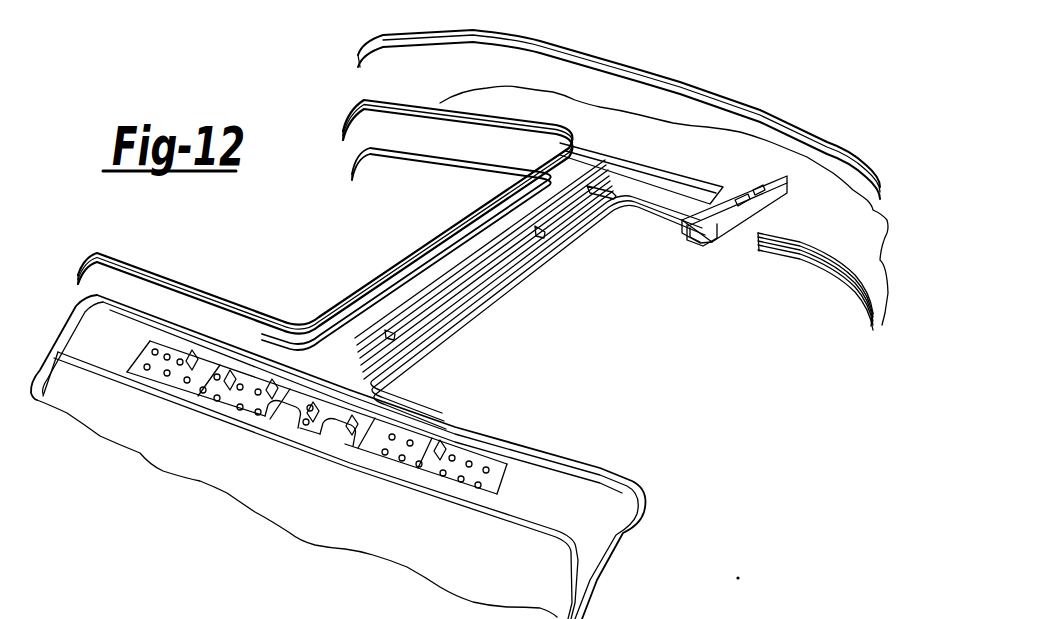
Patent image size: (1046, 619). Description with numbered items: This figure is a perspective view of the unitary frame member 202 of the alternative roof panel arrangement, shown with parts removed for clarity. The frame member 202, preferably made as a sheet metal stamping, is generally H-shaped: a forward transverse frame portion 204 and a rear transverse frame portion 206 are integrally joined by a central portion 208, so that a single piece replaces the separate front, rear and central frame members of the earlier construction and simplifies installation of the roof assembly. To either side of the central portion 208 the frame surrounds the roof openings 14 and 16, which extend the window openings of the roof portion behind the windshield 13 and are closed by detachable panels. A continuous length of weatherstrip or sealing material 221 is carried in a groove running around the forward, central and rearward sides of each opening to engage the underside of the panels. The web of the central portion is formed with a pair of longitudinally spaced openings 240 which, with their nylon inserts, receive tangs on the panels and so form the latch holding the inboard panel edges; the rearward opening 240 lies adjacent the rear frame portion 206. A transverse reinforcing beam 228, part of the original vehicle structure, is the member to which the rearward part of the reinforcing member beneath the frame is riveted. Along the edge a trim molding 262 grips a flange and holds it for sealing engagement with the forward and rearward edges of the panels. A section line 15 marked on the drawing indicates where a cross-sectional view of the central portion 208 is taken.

The trim molding 262 is at (552, 47).
The opening 16 is at (265, 229).
The weatherstrip or sealing material 221 is at (312, 284).
The unitary frame member 202 is at (553, 293).
The central frame portion 208 is at (515, 290).
The openings 240 is at (540, 232).
The transverse reinforcing beam 228 is at (763, 207).
The rear transverse frame portion 206 is at (828, 280).
The forward transverse frame portion 204 is at (530, 441).
The windshield 13 is at (680, 142).
The opening 14 is at (313, 347).
The section line 15 is at (333, 342).